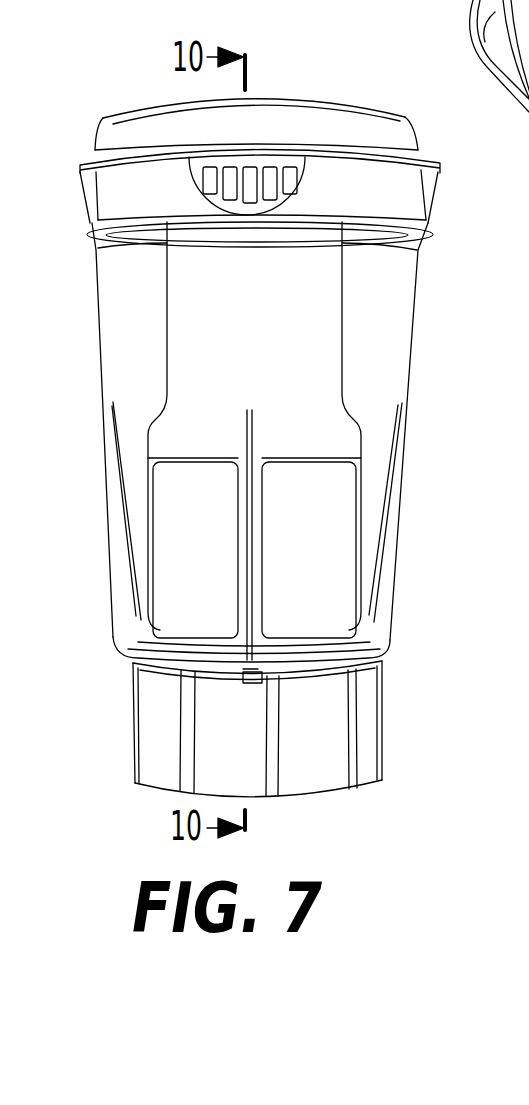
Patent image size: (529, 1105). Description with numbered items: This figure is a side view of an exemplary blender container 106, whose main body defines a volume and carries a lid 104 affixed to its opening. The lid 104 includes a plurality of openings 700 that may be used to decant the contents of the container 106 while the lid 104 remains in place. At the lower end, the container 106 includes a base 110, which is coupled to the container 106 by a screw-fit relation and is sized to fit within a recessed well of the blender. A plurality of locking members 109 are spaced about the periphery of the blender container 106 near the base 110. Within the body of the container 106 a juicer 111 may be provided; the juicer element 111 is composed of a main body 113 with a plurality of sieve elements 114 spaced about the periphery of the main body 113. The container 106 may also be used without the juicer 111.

The lid 104 is at (387, 128).
The openings 700 is at (270, 176).
The blender container 106 is at (120, 340).
The juicer element 111 is at (360, 283).
The main body 113 is at (330, 357).
The sieve elements 114 is at (209, 555).
The base 110 is at (363, 730).
The locking members 109 is at (249, 686).